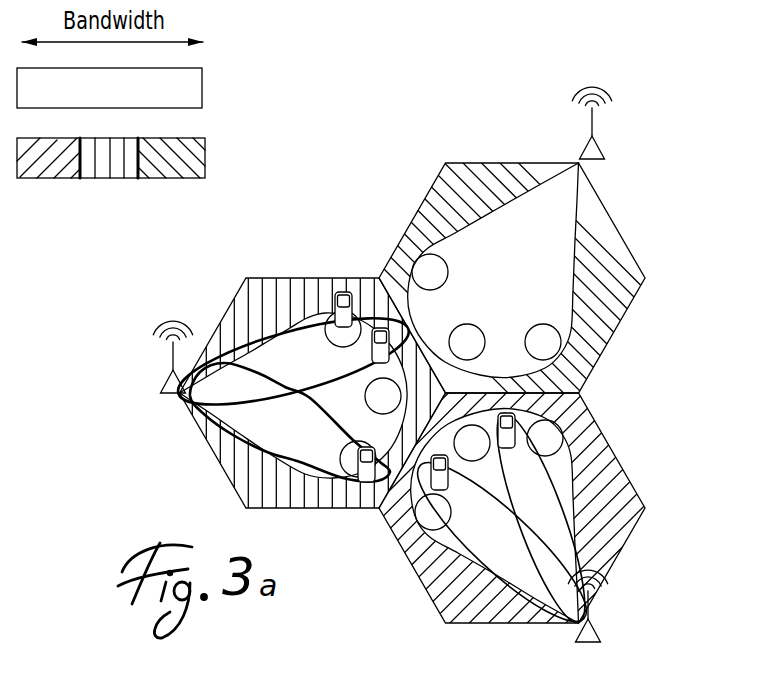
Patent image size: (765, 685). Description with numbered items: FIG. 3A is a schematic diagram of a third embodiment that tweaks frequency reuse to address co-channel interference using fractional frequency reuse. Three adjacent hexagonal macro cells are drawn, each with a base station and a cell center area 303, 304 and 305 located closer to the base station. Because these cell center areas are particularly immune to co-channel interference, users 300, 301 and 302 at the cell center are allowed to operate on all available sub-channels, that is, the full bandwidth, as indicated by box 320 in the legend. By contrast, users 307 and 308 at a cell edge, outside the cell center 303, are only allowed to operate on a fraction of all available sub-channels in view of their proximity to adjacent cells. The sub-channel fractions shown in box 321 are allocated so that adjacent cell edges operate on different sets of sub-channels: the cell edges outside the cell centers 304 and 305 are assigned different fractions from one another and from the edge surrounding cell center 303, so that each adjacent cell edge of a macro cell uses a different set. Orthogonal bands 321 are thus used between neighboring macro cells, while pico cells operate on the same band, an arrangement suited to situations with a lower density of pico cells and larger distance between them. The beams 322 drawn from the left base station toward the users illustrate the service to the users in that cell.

The user 300 is at (339, 292).
The user 301 is at (404, 531).
The user 302 is at (513, 425).
The cell center 303 is at (185, 398).
The cell center 304 is at (553, 222).
The cell center 305 is at (573, 492).
The user 307 is at (380, 328).
The user 308 is at (365, 481).
The box 320 is at (240, 88).
The box 321 is at (240, 158).
The beams 322 is at (341, 458).